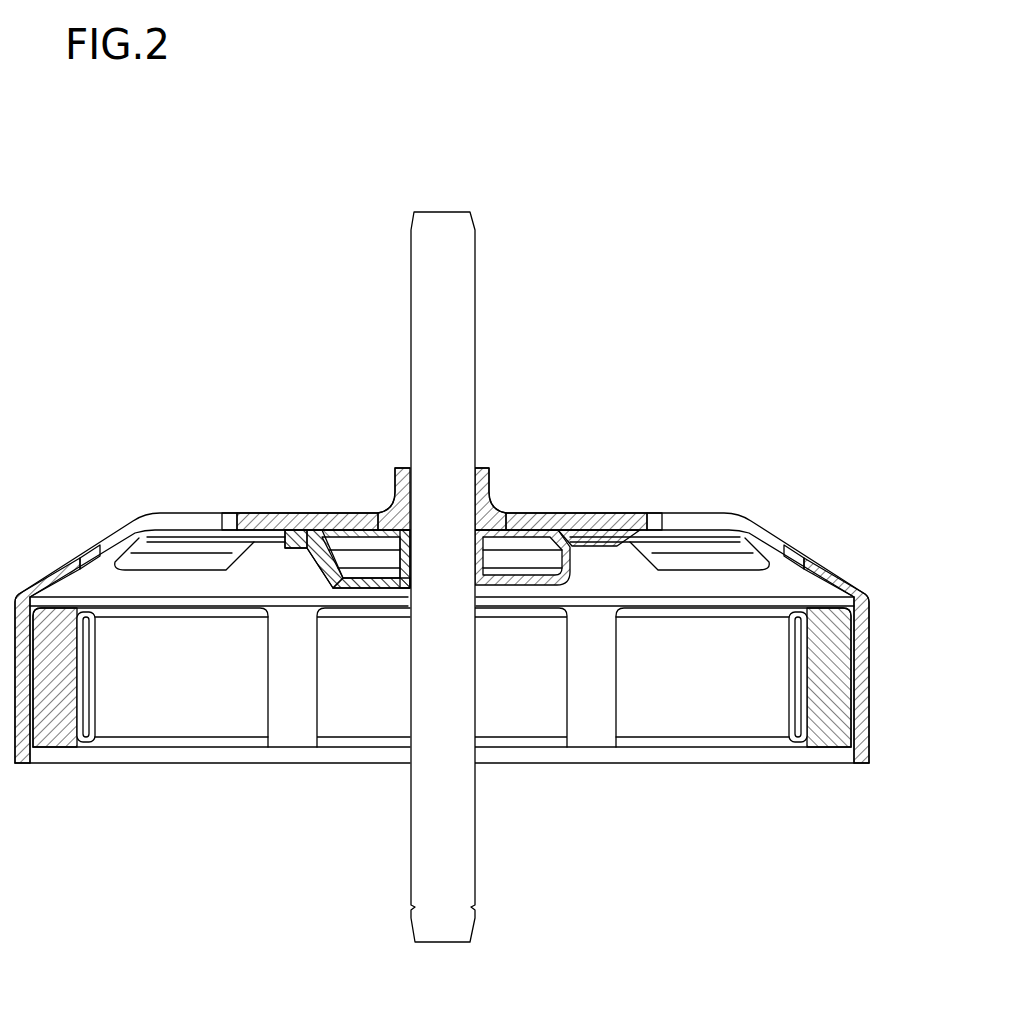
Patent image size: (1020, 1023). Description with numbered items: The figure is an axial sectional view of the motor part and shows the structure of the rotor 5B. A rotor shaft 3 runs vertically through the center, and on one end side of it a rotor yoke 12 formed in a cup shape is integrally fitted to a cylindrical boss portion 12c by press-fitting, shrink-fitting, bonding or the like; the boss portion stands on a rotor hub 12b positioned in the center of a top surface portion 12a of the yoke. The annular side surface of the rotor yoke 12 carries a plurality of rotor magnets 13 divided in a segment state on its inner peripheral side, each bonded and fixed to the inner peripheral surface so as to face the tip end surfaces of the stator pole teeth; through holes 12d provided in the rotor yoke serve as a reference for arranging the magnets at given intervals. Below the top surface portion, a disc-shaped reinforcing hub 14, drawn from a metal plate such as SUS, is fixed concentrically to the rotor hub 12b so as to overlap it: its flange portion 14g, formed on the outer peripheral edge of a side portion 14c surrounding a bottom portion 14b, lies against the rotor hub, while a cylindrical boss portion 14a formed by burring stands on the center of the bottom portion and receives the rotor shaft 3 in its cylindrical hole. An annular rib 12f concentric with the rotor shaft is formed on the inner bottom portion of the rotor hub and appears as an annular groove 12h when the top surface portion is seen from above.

The rotor shaft 3 is at (470, 265).
The rotor 5B is at (750, 381).
The rotor yoke 12 is at (469, 577).
The top surface portion 12a is at (701, 513).
The rotor hub 12b is at (508, 513).
The cylindrical boss portion 12c is at (483, 468).
The through hole 12d is at (123, 530).
The annular rib 12f is at (655, 528).
The annular groove 12h is at (635, 540).
The rotor magnet 13 is at (843, 670).
The reinforcing hub 14 is at (294, 635).
The cylindrical boss portion 14a is at (318, 578).
The bottom portion 14b is at (348, 550).
The side portion 14c is at (295, 527).
The flange portion 14g is at (273, 513).